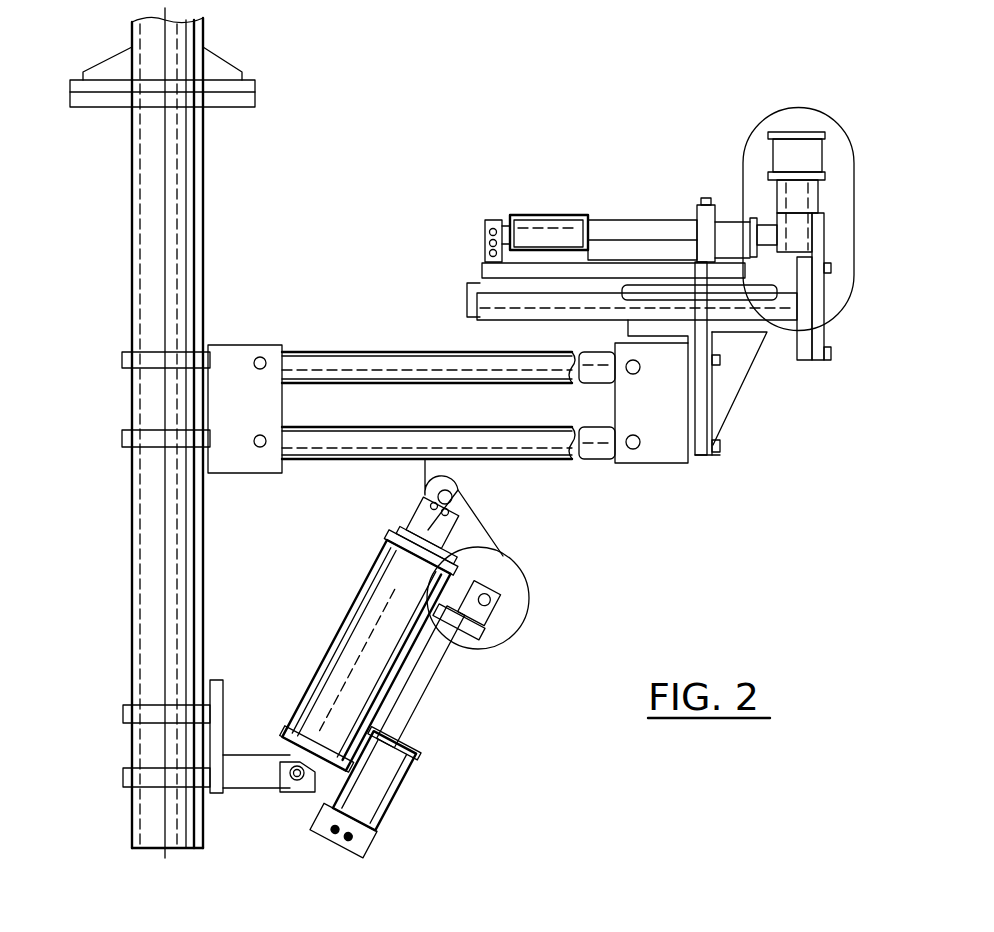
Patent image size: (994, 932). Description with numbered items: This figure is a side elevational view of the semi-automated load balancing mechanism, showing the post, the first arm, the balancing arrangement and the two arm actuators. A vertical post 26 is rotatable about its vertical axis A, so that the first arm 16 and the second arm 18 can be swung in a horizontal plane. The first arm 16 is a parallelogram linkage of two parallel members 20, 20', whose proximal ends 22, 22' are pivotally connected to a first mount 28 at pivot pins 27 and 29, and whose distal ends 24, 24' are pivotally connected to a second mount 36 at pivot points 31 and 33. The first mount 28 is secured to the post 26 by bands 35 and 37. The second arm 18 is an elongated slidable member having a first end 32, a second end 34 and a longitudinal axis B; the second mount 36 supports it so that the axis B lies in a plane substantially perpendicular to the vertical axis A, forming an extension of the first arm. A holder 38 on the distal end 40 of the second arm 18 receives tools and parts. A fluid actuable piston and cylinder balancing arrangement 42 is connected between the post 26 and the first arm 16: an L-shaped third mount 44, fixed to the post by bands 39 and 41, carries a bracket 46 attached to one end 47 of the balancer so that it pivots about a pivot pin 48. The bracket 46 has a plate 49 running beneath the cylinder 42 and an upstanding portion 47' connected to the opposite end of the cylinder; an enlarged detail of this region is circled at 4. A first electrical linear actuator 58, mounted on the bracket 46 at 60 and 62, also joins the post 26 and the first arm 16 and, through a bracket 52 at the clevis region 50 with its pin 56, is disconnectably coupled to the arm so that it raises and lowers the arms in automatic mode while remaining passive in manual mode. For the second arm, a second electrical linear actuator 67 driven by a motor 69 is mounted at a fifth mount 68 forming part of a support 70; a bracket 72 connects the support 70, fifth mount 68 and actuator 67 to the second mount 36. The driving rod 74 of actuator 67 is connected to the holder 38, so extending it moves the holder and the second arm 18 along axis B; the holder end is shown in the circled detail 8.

The vertical axis A is at (168, 52).
The longitudinal axis B is at (838, 305).
The detail circle 4 is at (507, 598).
The detail circle 8 is at (812, 235).
The first arm 16 is at (448, 399).
The second arm 18 is at (612, 315).
The parallel member 20 is at (428, 338).
The parallel member 20' is at (428, 448).
The proximal end 22 is at (427, 333).
The proximal end 22' is at (427, 413).
The distal end 24 is at (584, 384).
The distal end 24' is at (596, 466).
The post 26 is at (132, 512).
The pivot pin 27 is at (262, 357).
The first mount 28 is at (232, 345).
The pivot pin 29 is at (256, 437).
The pivot point 31 is at (638, 371).
The first end 32 is at (472, 312).
The pivot point 33 is at (639, 438).
The second end 34 is at (789, 318).
The band 35 is at (124, 358).
The second mount 36 is at (670, 468).
The band 37 is at (124, 437).
The holder 38 is at (826, 320).
The band 39 is at (124, 713).
The distal end 40 is at (826, 358).
The band 41 is at (124, 777).
The piston and cylinder balancing arrangement 42 is at (374, 631).
The third mount 44 is at (262, 746).
The bracket 46 is at (302, 805).
The end of balancing arrangement 47 is at (311, 717).
The upstanding portion 47' is at (411, 532).
The pivot pin 48 is at (290, 782).
The plate 49 is at (390, 698).
The clevis plate 50 is at (452, 508).
The bracket 52 is at (462, 516).
The pin 56 is at (437, 497).
The first electrical linear actuator 58 is at (449, 719).
The mounting location 60 is at (362, 843).
The mounting location 62 is at (515, 612).
The second electrical linear actuator 67 is at (570, 212).
The fifth mount 68 is at (487, 228).
The motor 69 is at (554, 206).
The support 70 is at (490, 277).
The bracket 72 is at (707, 408).
The driving rod 74 is at (642, 219).